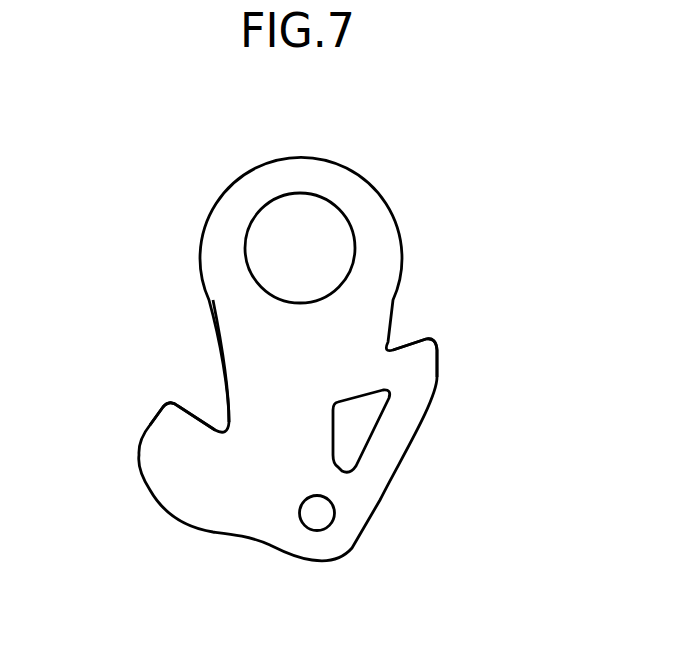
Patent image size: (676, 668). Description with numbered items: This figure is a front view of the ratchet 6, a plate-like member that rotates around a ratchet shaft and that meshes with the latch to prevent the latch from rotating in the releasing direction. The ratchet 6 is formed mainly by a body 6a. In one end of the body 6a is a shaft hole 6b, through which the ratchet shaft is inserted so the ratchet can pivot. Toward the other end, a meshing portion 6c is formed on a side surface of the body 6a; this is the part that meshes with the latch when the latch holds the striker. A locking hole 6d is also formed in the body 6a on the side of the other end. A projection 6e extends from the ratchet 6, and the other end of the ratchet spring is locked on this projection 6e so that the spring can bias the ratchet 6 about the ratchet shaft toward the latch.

The ratchet 6 is at (400, 198).
The body 6a is at (240, 330).
The shaft hole 6b is at (277, 198).
The meshing portion 6c is at (173, 432).
The locking hole 6d is at (320, 518).
The projection 6e is at (428, 358).